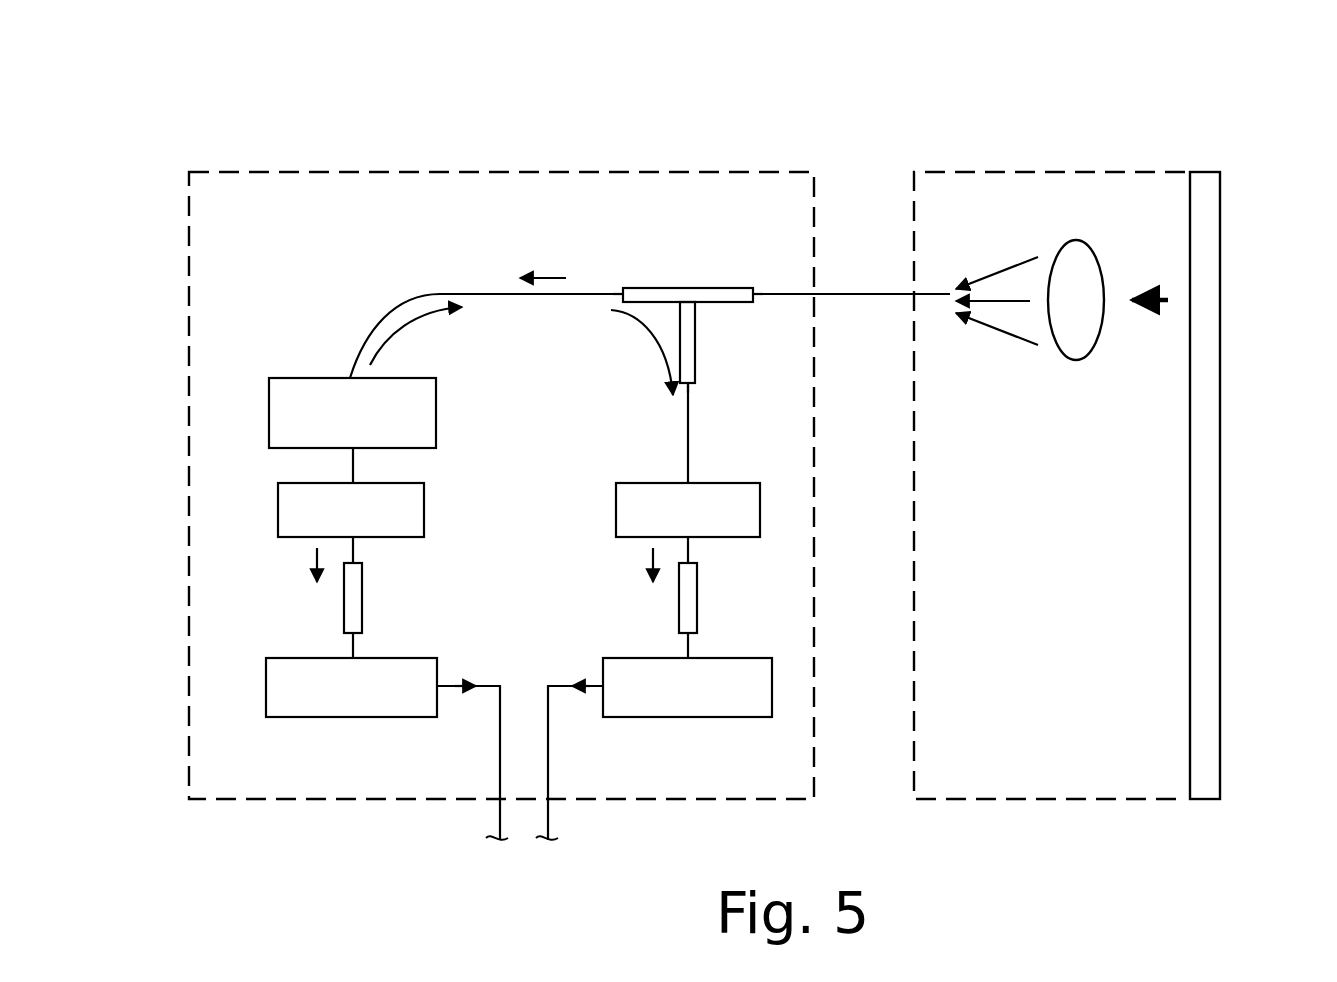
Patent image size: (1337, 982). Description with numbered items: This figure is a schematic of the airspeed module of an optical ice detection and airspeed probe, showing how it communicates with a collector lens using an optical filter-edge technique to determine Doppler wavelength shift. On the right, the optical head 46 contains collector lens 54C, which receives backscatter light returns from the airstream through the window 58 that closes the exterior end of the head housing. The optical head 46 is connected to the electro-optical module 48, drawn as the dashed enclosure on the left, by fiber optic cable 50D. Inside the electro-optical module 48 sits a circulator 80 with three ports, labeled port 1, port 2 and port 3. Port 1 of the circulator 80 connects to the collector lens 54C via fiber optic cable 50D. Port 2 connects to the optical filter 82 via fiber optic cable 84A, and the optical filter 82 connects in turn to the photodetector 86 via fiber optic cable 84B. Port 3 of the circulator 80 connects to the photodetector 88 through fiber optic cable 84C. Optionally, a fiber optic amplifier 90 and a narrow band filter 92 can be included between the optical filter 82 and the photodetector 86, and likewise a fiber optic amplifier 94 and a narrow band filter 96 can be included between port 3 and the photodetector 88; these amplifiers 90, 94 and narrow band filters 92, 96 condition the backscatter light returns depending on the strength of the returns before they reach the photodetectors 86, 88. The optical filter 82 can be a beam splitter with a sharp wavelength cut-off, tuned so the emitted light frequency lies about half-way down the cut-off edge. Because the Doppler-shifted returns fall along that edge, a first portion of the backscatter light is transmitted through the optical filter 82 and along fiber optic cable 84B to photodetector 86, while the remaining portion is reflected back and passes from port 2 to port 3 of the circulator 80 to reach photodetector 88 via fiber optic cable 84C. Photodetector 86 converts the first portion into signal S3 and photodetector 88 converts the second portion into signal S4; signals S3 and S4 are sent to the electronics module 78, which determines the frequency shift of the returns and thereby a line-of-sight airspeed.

The optical head 46 is at (1087, 136).
The electro-optical module 48 is at (487, 136).
The fiber optic cable 50D is at (853, 294).
The collector lens 54C is at (1082, 243).
The window 58 is at (1220, 637).
The electronics module 78 is at (523, 858).
The circulator 80 is at (673, 288).
The port 1 is at (757, 274).
The port 2 is at (613, 275).
The port 3 is at (703, 383).
The optical filter 82 is at (369, 427).
The fiber optic cable 84A is at (465, 292).
The fiber optic cable 84B is at (350, 460).
The fiber optic cable 84C is at (688, 437).
The photodetector 86 is at (369, 699).
The photodetector 88 is at (705, 699).
The fiber optic amplifier 90 is at (369, 520).
The narrow band filter 92 is at (364, 590).
The fiber optic amplifier 94 is at (705, 520).
The narrow band filter 96 is at (698, 590).
The signal S3 is at (454, 684).
The signal S4 is at (587, 682).